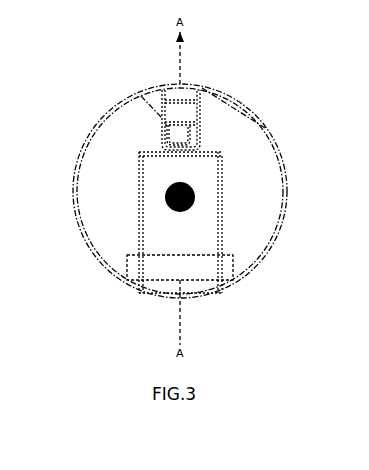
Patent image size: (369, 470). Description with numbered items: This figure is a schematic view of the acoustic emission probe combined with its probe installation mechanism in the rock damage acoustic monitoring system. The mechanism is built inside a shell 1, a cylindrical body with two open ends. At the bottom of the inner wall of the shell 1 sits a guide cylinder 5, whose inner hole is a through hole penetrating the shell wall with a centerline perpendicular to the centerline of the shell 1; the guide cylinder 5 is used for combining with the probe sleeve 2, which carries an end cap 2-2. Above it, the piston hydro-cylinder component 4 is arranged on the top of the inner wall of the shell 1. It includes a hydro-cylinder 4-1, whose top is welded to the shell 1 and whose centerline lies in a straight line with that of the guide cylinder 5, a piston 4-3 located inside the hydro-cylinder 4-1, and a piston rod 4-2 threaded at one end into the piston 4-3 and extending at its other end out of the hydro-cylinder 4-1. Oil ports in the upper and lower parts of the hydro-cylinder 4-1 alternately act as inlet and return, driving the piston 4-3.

The shell 1 is at (106, 114).
The probe sleeve 2 is at (139, 228).
The end cap 2-2 is at (220, 151).
The piston hydro-cylinder component 4 is at (152, 121).
The hydro-cylinder 4-1 is at (178, 133).
The piston rod 4-2 is at (141, 96).
The piston 4-3 is at (185, 112).
The guide cylinder 5 is at (234, 264).